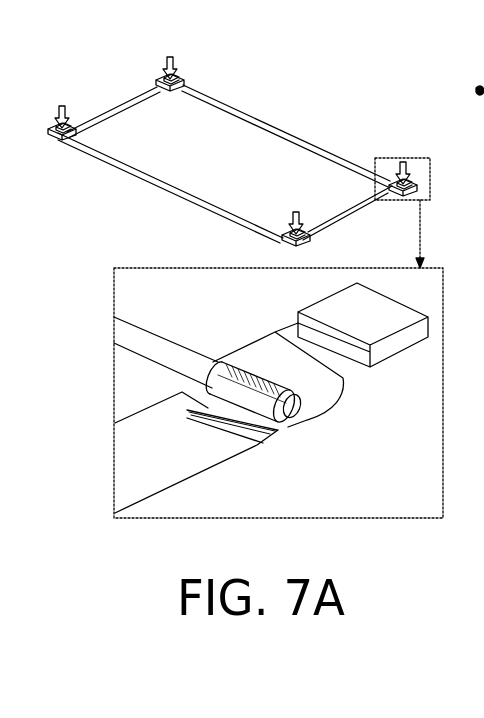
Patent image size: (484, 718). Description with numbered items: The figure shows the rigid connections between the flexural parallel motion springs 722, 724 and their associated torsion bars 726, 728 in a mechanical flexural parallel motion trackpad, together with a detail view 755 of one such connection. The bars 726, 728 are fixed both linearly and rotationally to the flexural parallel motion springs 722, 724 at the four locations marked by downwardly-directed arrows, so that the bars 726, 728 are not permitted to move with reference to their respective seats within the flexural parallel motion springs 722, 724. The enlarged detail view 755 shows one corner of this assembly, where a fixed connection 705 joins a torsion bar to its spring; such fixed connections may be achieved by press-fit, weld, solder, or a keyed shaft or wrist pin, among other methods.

The flexural parallel motion spring 722 is at (120, 107).
The flexural parallel motion spring 724 is at (340, 218).
The torsion bar 726 is at (212, 101).
The torsion bar 728 is at (150, 178).
The detail view 755 is at (398, 159).
The fixed connection 705 is at (290, 420).